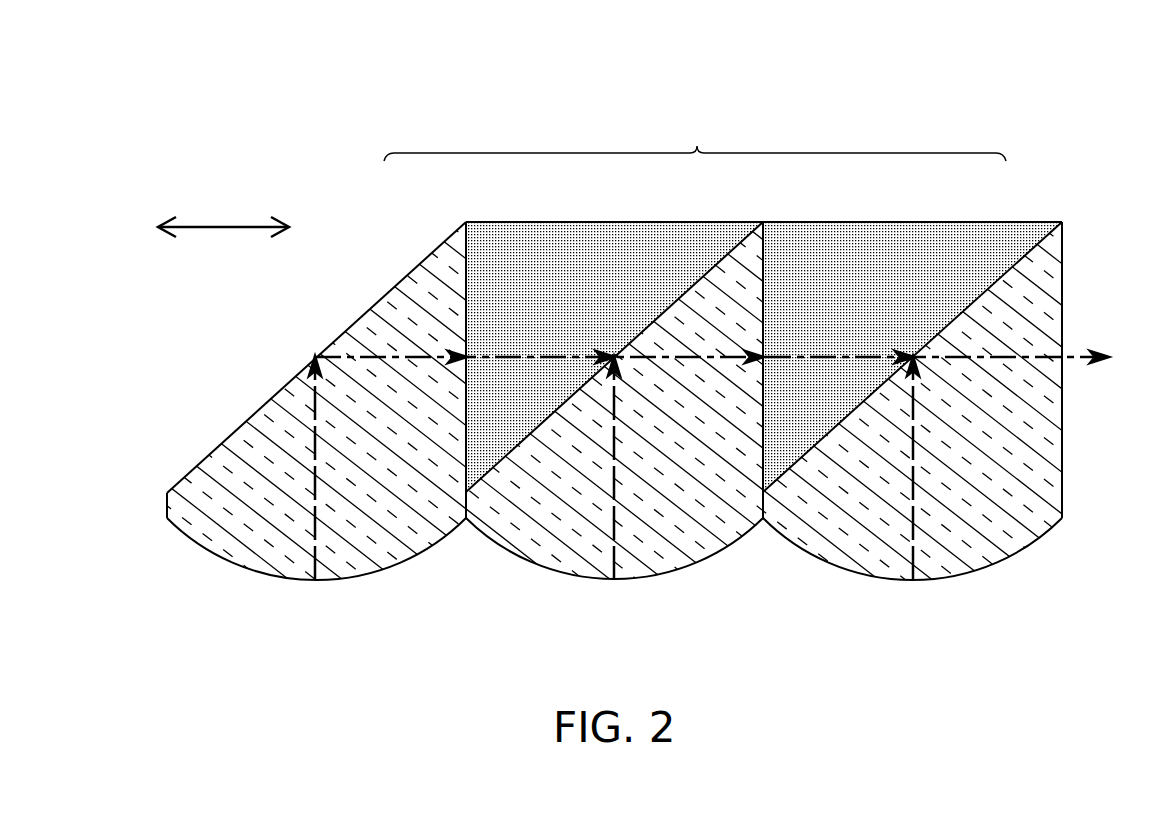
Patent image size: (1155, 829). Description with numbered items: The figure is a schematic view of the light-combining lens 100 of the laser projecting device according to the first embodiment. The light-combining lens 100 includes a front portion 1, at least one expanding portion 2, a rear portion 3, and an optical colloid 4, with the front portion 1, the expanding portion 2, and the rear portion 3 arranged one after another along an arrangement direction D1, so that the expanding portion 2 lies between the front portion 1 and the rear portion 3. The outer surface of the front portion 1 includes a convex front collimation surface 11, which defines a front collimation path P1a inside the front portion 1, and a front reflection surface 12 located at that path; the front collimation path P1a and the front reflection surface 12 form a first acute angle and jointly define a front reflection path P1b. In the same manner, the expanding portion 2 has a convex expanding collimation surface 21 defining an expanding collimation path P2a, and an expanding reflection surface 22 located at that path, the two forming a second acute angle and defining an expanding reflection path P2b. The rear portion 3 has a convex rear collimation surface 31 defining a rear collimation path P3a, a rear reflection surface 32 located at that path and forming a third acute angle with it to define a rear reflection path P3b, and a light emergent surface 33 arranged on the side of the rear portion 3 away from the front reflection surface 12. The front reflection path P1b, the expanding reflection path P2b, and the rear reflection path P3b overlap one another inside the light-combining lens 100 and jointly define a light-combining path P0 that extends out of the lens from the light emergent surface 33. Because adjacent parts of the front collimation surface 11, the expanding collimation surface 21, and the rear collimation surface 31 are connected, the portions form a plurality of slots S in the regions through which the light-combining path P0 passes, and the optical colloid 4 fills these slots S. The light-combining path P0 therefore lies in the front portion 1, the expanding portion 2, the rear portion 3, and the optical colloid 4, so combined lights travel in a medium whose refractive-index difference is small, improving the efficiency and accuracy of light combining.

The light-combining lens 100 is at (219, 108).
The front portion 1 is at (397, 574).
The expanding portion 2 is at (695, 574).
The rear portion 3 is at (992, 574).
The optical colloid 4 is at (531, 220).
The front collimation surface 11 is at (272, 585).
The front reflection surface 12 is at (270, 384).
The expanding collimation surface 21 is at (571, 585).
The expanding reflection surface 22 is at (633, 323).
The rear collimation surface 31 is at (870, 585).
The rear reflection surface 32 is at (932, 324).
The light emergent surface 33 is at (1071, 317).
The slots S is at (456, 290).
The light-combining path P0 is at (695, 138).
The front collimation path P1a is at (342, 584).
The front reflection path P1b is at (398, 355).
The expanding collimation path P2a is at (641, 584).
The expanding reflection path P2b is at (680, 355).
The rear collimation path P3a is at (940, 584).
The rear reflection path P3b is at (1005, 355).
The arrangement direction D1 is at (223, 215).